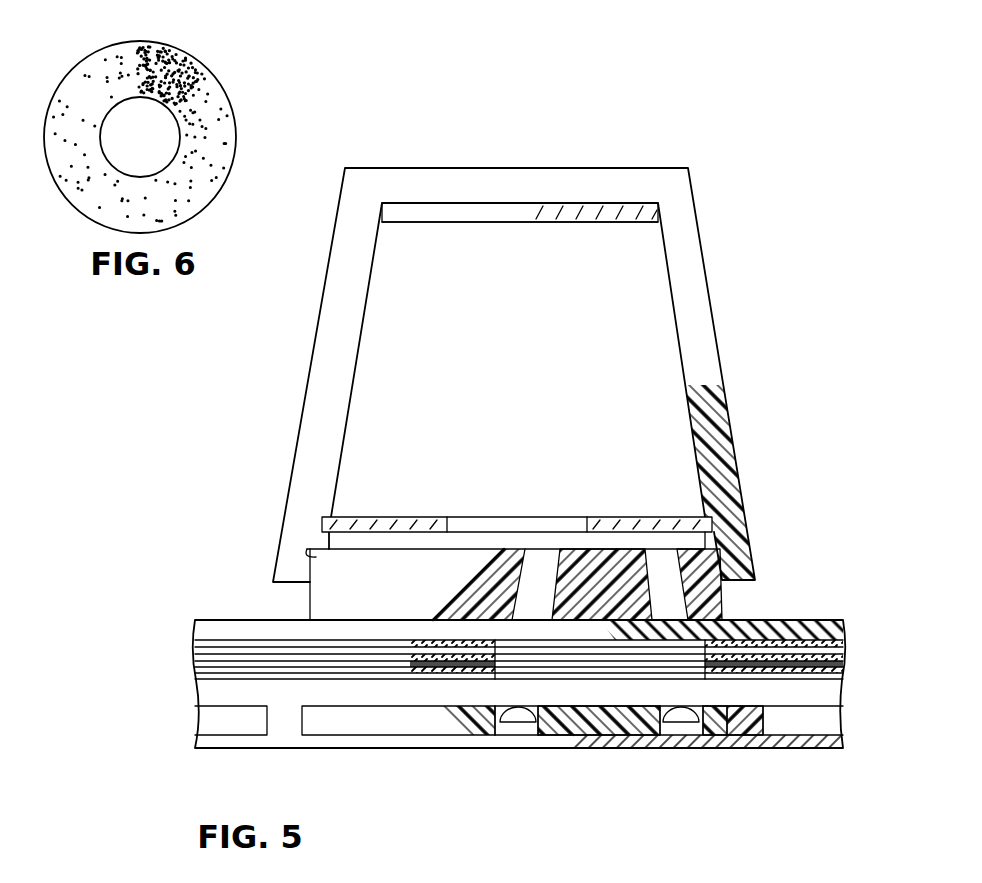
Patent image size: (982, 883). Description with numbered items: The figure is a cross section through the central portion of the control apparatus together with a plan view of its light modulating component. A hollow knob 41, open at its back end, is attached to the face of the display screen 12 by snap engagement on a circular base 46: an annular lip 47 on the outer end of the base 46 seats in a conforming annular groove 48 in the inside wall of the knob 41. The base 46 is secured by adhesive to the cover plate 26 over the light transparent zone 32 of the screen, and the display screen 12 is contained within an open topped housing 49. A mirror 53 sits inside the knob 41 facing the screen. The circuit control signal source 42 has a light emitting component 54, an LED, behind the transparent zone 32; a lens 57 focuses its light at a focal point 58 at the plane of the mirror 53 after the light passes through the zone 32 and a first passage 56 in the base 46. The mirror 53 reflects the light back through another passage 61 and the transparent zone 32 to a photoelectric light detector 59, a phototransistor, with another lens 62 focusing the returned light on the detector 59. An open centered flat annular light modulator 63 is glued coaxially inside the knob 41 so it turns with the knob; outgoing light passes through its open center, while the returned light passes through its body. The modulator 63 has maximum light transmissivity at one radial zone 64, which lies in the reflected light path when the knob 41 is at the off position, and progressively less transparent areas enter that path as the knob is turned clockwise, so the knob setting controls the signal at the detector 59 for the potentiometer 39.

In FIG. 5, the display screen 12 is at (206, 608).
In FIG. 5, the cover plate 26 is at (801, 620).
In FIG. 5, the light transparent zone 32 is at (559, 713).
In FIG. 5, the potentiometer 39 is at (792, 372).
In FIG. 5, the knob 41 is at (703, 257).
In FIG. 5, the circuit control signal source 42 is at (462, 746).
In FIG. 5, the circular base 46 is at (310, 598).
In FIG. 5, the annular lip 47 is at (292, 547).
In FIG. 5, the annular groove 48 is at (316, 557).
In FIG. 5, the housing 49 is at (253, 748).
In FIG. 5, the mirror 53 is at (428, 222).
In FIG. 5, the light emitting component 54 is at (520, 736).
In FIG. 5, the first passage 56 is at (517, 570).
In FIG. 5, the lens 57 is at (504, 707).
In FIG. 5, the focal point 58 is at (602, 226).
In FIG. 5, the photoelectric light detector 59 is at (683, 736).
In FIG. 5, the passage 61 is at (668, 562).
In FIG. 5, the lens 62 is at (666, 706).
In FIG. 6, the light modulator 63 is at (213, 199).
In FIG. 5, the light modulator 63 is at (399, 517).
In FIG. 6, the radial zone of maximum light transmissivity 64 is at (147, 39).